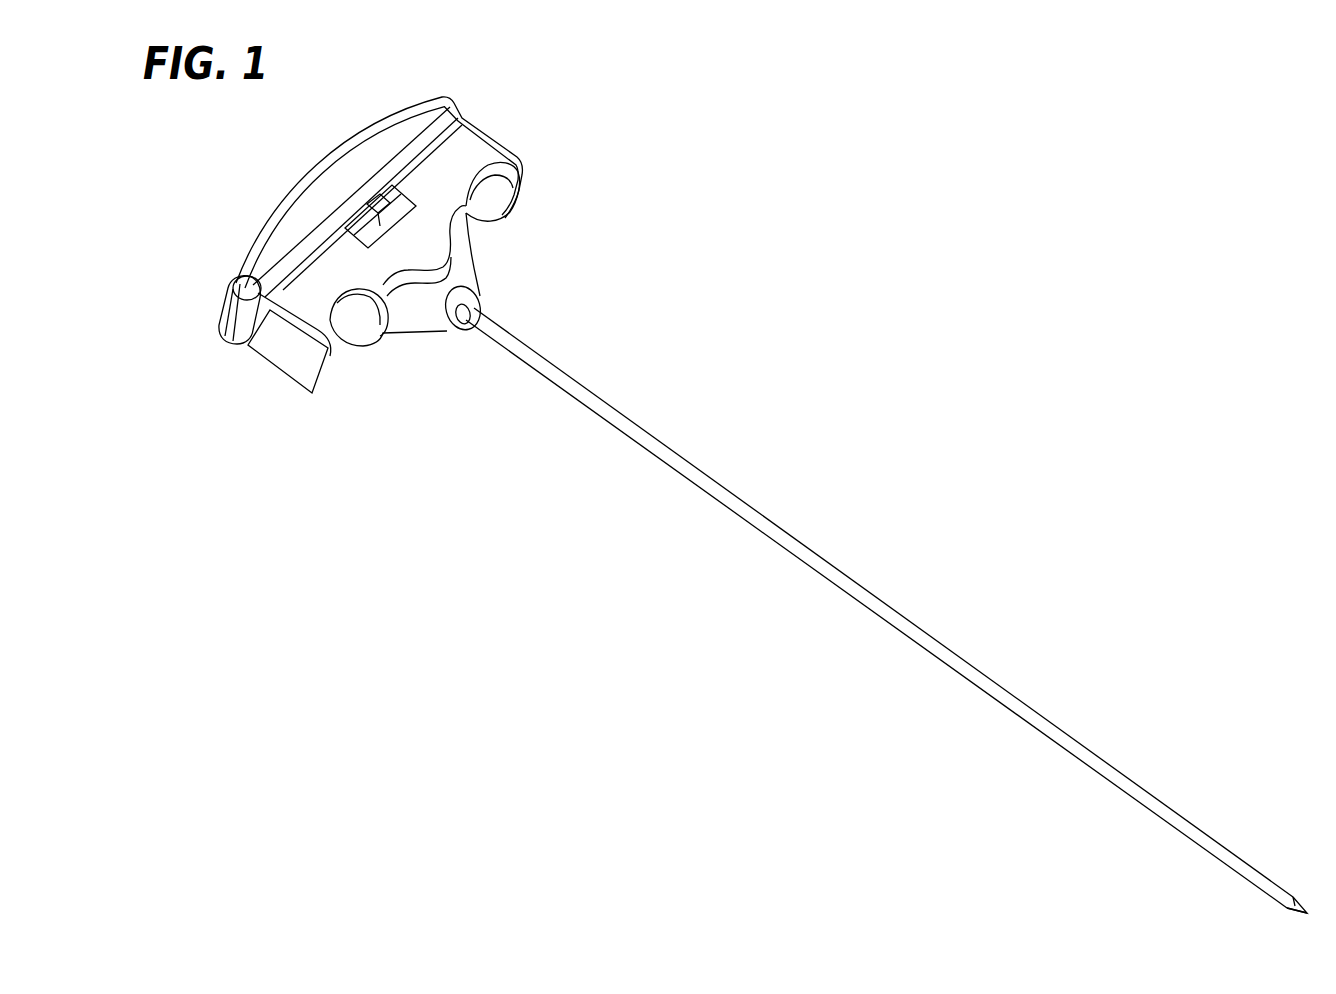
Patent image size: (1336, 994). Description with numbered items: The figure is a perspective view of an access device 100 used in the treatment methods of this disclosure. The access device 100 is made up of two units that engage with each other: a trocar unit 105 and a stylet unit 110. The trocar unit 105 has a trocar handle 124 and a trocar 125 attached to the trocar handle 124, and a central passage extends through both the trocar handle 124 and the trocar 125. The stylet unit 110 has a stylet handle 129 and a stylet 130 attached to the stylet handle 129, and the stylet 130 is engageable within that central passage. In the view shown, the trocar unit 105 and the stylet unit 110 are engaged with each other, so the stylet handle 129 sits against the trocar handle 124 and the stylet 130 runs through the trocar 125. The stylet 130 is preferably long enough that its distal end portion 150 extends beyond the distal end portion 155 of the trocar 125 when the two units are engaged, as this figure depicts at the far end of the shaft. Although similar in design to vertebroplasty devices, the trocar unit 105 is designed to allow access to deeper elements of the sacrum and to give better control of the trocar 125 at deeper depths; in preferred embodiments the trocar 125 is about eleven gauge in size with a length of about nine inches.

The access device 100 is at (772, 210).
The trocar unit 105 is at (505, 141).
The stylet unit 110 is at (447, 103).
The trocar handle 124 is at (285, 360).
The trocar 125 is at (765, 512).
The stylet handle 129 is at (225, 337).
The stylet 130 is at (1307, 913).
The distal end portion of the stylet 150 is at (1307, 915).
The distal end portion of the trocar 155 is at (1283, 893).